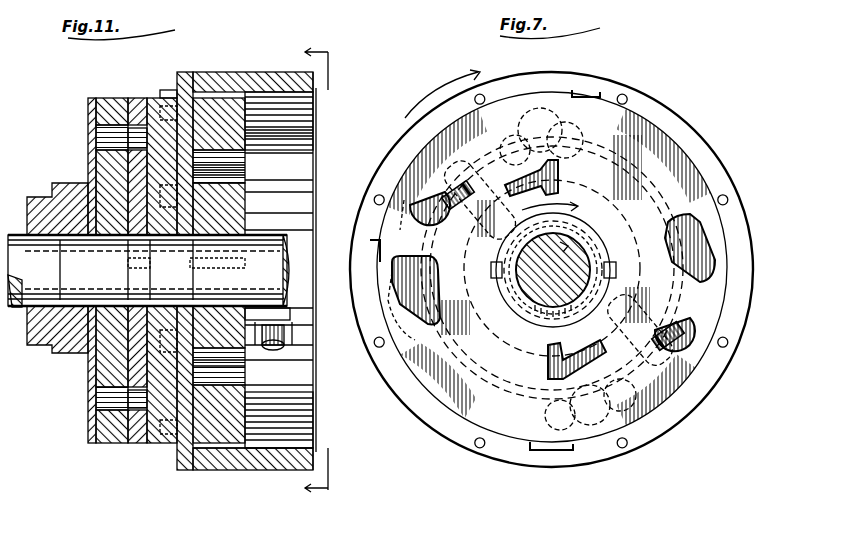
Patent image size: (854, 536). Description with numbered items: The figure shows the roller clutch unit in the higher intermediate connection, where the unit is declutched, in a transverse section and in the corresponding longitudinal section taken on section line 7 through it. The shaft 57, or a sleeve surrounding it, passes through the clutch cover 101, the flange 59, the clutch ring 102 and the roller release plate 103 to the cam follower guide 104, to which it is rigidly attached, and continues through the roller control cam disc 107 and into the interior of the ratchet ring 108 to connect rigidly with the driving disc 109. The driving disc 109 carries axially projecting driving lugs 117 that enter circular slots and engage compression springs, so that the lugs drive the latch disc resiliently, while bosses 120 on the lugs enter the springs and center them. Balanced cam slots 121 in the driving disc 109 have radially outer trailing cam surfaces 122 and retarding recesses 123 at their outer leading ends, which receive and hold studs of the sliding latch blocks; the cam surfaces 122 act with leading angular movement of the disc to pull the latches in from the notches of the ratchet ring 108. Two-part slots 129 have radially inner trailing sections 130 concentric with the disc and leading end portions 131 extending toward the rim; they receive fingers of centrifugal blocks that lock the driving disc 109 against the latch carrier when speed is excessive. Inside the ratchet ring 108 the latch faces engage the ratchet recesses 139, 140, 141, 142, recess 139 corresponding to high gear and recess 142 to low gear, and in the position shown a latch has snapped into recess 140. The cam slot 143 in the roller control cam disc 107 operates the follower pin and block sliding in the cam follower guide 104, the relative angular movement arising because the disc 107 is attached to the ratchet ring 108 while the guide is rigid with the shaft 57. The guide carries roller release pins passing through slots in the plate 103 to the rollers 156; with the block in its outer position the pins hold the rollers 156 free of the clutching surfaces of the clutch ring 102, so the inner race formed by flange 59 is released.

In FIG. 11, the section line 7- 7 is at (308, 271).
In FIG. 11, the shaft 57 is at (315, 290).
In FIG. 7, the shaft 57 is at (540, 300).
In FIG. 11, the flange 59 is at (90, 181).
In FIG. 11, the clutch cover 101 is at (88, 110).
In FIG. 11, the clutch ring 102 is at (108, 98).
In FIG. 11, the roller release plate 103 is at (135, 443).
In FIG. 11, the cam follower guide 104 is at (147, 98).
In FIG. 11, the roller control cam disc 107 is at (186, 72).
In FIG. 11, the ratchet ring 108 is at (247, 78).
In FIG. 7, the ratchet ring 108 is at (608, 88).
In FIG. 11, the driving disc 109 is at (208, 100).
In FIG. 7, the driving disc 109 is at (623, 124).
In FIG. 11, the driving lugs 117 is at (293, 336).
In FIG. 7, the driving lugs 117 is at (418, 200).
In FIG. 11, the bosses 120 is at (275, 348).
In FIG. 7, the bosses 120 is at (440, 193).
In FIG. 7, the cam slots 121 is at (430, 290).
In FIG. 7, the trailing cam surfaces 122 is at (690, 218).
In FIG. 11, the retarding recesses 123 is at (292, 311).
In FIG. 7, the retarding recesses 123 is at (392, 282).
In FIG. 11, the slots 129 is at (225, 180).
In FIG. 7, the slots 129 is at (558, 177).
In FIG. 7, the radially inner trailing sections 130 is at (618, 352).
In FIG. 11, the leading end portions 131 is at (245, 163).
In FIG. 7, the leading end portions 131 is at (558, 158).
In FIG. 11, the ratchet recess 139 is at (318, 97).
In FIG. 7, the ratchet recess 139 is at (575, 92).
In FIG. 7, the ratchet recess 140 is at (733, 302).
In FIG. 11, the ratchet recess 141 is at (307, 444).
In FIG. 7, the ratchet recess 141 is at (536, 450).
In FIG. 7, the ratchet recess 142 is at (374, 247).
In FIG. 11, the cam slot 143 is at (250, 136).
In FIG. 11, the rollers 156 is at (108, 402).